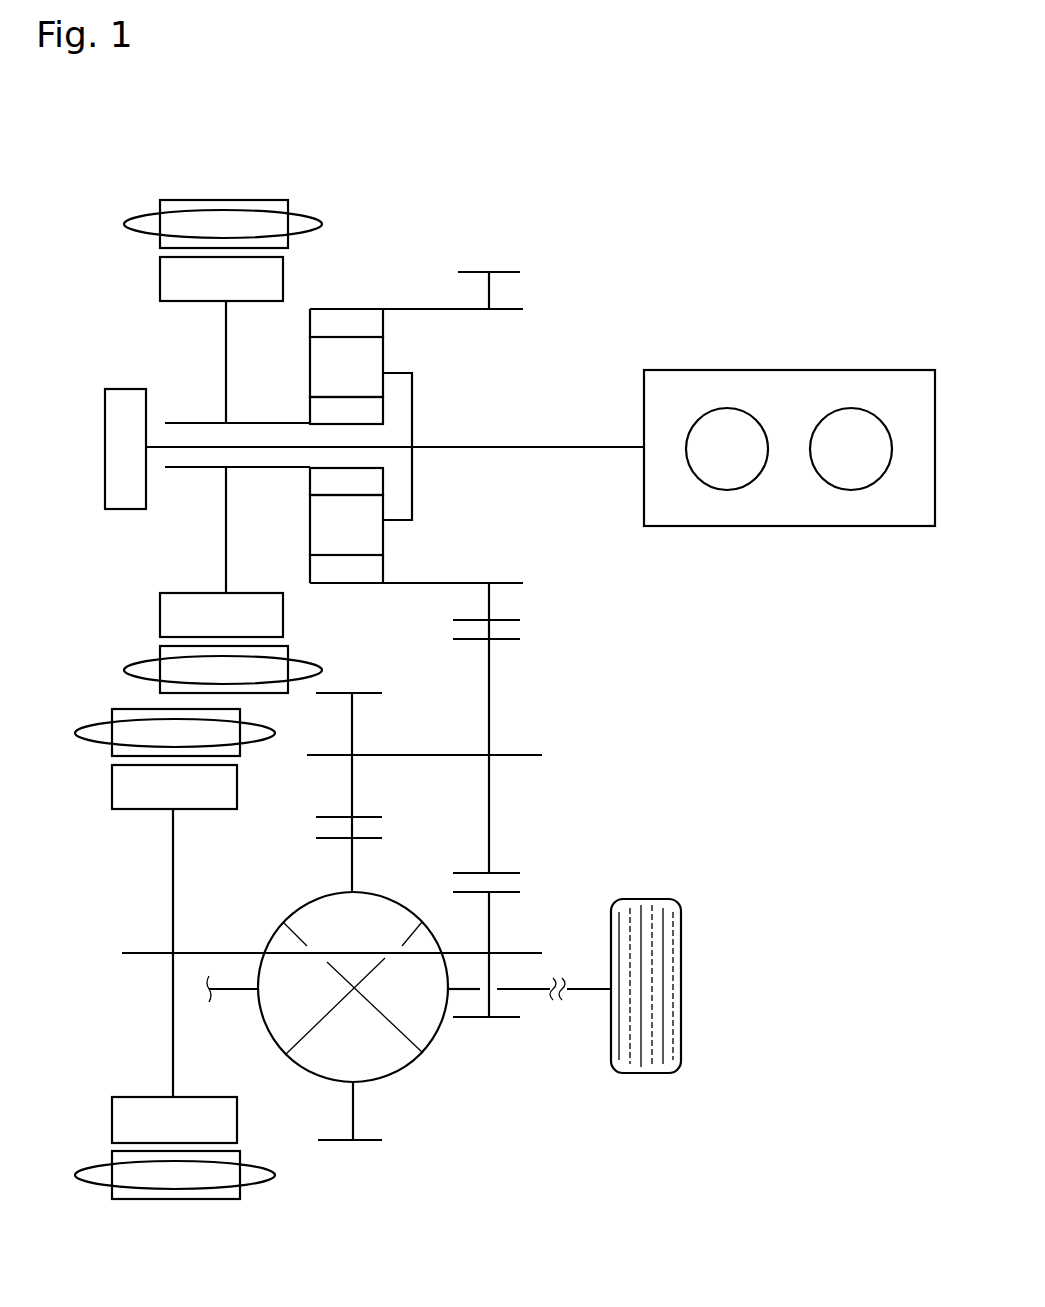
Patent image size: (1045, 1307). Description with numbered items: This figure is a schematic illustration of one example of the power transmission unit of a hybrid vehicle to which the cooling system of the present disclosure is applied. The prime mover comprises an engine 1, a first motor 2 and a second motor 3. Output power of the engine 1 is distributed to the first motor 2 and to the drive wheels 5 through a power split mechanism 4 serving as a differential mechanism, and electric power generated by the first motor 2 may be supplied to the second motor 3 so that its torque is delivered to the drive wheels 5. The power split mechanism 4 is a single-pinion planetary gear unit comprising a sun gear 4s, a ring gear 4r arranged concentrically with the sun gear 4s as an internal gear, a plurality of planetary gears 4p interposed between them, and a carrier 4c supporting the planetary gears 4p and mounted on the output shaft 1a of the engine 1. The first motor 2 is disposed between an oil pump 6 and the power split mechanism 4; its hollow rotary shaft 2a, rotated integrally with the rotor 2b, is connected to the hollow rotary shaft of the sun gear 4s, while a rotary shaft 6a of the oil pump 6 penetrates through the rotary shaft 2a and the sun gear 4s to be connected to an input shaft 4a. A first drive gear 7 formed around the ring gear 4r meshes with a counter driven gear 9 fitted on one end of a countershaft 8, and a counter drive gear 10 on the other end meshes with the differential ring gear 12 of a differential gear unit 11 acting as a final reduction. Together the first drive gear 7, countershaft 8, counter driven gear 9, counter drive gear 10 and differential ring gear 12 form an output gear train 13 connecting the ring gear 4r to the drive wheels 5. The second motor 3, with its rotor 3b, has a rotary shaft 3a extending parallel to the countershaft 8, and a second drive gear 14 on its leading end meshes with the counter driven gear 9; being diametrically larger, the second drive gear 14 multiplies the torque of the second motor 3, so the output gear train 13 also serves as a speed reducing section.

The engine 1 is at (786, 527).
The output shaft of the engine 1a is at (585, 447).
The first motor 2 is at (193, 431).
The hollow rotary shaft 2a is at (235, 530).
The rotor 2b is at (177, 302).
The second motor 3 is at (292, 971).
The rotary shaft of the second motor 3a is at (233, 953).
The rotor of the second motor 3b is at (124, 810).
The power split mechanism 4 is at (386, 357).
The input shaft 4a is at (262, 452).
The carrier 4c is at (412, 403).
The planetary gears 4p is at (370, 337).
The ring gear 4r is at (371, 309).
The sun gear 4s is at (322, 413).
The drive wheels 5 is at (683, 980).
The oil pump 6 is at (123, 510).
The rotary shaft of the oil pump 6a is at (157, 447).
The first drive gear 7 is at (498, 272).
The countershaft 8 is at (432, 755).
The counter driven gear 9 is at (510, 634).
The counter drive gear 10 is at (358, 693).
The differential gear unit 11 is at (393, 1078).
The differential ring gear 12 is at (360, 1142).
The output gear train 13 is at (503, 824).
The second drive gear 14 is at (481, 1019).